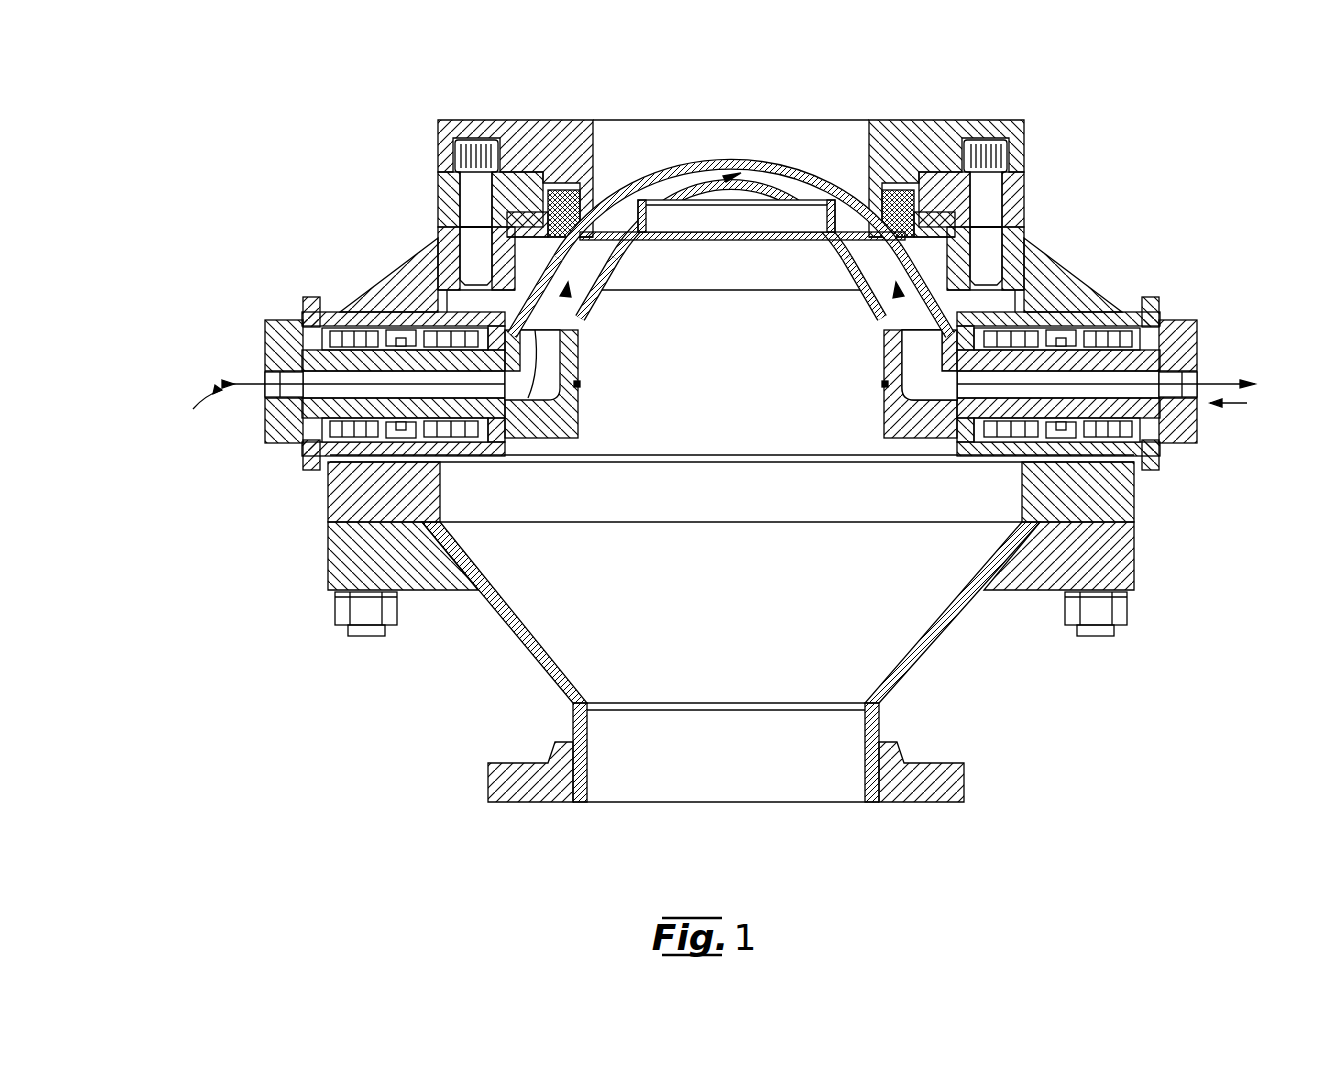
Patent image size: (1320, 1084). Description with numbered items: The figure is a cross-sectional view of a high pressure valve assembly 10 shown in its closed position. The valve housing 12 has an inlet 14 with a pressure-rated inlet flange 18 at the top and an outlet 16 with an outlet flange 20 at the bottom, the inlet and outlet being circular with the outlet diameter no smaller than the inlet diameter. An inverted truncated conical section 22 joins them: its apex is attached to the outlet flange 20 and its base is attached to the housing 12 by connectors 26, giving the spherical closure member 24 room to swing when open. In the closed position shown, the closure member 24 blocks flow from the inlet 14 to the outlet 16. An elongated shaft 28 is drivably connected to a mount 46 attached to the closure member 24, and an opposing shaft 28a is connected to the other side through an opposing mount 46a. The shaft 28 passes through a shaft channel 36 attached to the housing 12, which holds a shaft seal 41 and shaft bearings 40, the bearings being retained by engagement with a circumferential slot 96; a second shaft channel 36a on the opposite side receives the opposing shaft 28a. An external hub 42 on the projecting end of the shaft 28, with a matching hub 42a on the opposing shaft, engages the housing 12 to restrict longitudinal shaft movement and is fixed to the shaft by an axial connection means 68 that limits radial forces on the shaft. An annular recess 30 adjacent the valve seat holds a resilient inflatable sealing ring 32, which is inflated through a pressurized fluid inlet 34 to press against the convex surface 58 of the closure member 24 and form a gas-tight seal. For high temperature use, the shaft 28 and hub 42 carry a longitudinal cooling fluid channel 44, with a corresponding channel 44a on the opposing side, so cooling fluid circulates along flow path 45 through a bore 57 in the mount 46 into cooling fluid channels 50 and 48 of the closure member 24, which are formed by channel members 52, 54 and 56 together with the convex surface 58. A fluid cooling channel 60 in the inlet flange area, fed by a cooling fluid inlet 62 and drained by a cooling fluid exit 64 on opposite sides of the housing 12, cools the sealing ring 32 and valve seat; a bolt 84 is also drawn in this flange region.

The valve assembly 10 is at (734, 513).
The housing 12 is at (1123, 497).
The inlet 14 is at (663, 135).
The outlet 16 is at (798, 787).
The inlet flange 18 is at (1033, 128).
The outlet flange 20 is at (488, 778).
The conical section 22 is at (507, 640).
The closure member 24 is at (732, 157).
The connectors 26 is at (335, 632).
The elongated shaft 28 is at (288, 368).
The opposing shaft 28a is at (1180, 358).
The annular recess 30 is at (551, 192).
The resilient inflatable sealing ring 32 is at (593, 170).
The pressurized fluid inlet 34 is at (1033, 204).
The shaft channel 36 is at (341, 313).
The second shaft channel 36a is at (1118, 313).
The shaft bearing 40 is at (458, 449).
The shaft seal 41 is at (500, 456).
The external hub 42 is at (266, 323).
The opposing external hub 42a is at (1200, 427).
The longitudinal cooling fluid channel 44 is at (266, 392).
The opposing longitudinal cooling fluid channel 44a is at (1247, 403).
The flow path 45 is at (193, 403).
The mount 46 is at (577, 344).
The opposing mount 46a is at (891, 341).
The cooling fluid channel 48 is at (764, 187).
The cooling fluid channel 50 is at (853, 244).
The channel member 52 is at (592, 300).
The channel member 54 is at (570, 249).
The channel member 56 is at (692, 243).
The bore 57 is at (896, 412).
The convex surface 58 is at (812, 190).
The fluid cooling channel 60 is at (900, 160).
The cooling fluid inlet 62 is at (1033, 171).
The cooling fluid exit 64 is at (438, 159).
The axial connection means 68 is at (578, 386).
The bolt 84 is at (946, 122).
The circumferential slot 96 is at (307, 443).